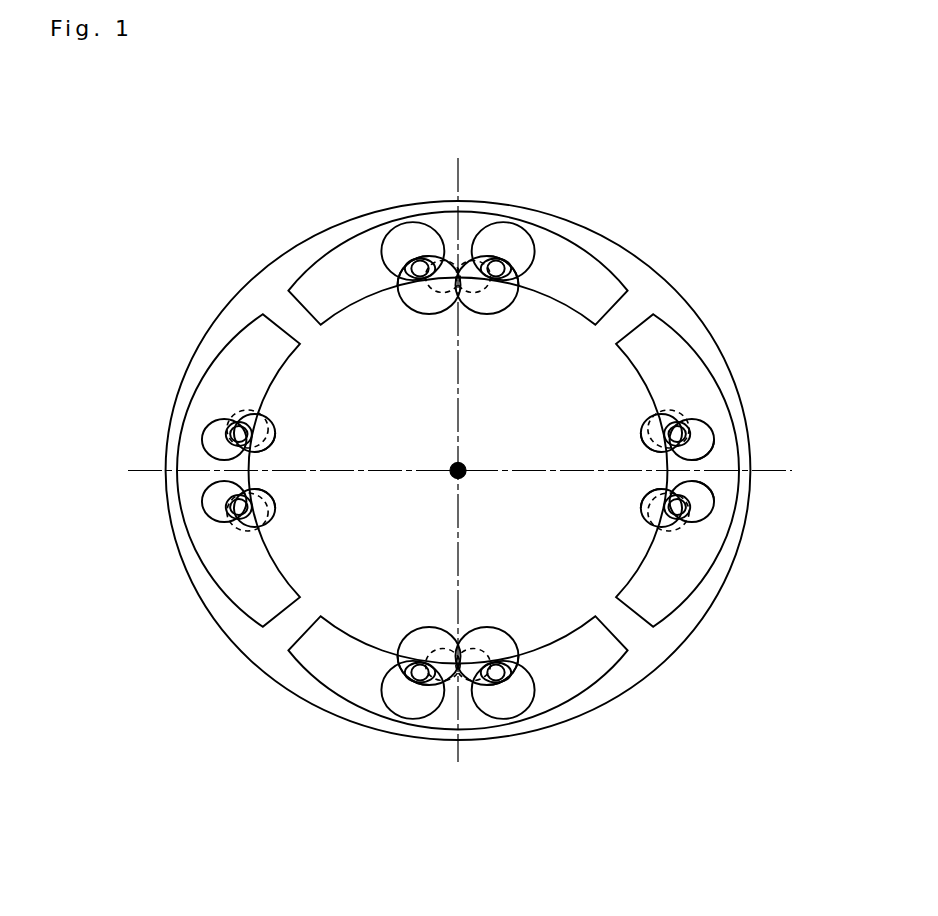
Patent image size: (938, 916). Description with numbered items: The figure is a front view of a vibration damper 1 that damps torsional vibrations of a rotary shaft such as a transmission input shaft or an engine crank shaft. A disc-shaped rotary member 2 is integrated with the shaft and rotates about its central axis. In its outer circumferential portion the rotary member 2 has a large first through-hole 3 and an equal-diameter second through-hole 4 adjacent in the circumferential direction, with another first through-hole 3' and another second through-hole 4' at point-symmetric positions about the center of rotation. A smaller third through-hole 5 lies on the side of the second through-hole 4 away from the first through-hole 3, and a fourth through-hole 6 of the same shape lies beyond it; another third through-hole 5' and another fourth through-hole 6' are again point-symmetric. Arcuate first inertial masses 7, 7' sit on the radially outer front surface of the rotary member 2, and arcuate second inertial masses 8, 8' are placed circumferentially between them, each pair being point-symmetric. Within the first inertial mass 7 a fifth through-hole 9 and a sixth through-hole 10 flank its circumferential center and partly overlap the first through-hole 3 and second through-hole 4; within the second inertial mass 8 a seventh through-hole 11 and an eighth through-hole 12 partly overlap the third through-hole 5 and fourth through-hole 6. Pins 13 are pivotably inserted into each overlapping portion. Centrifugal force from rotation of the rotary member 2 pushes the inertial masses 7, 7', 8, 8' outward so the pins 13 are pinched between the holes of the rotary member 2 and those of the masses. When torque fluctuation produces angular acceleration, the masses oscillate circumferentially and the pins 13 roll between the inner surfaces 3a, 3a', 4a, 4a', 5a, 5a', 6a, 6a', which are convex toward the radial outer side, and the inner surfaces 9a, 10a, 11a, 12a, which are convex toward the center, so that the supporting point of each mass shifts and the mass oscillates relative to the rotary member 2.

The vibration damper 1 is at (642, 134).
The rotary member 2 is at (653, 276).
The first through-hole 3 is at (429, 310).
The inner surface of first through-hole 3a is at (396, 299).
The first through-hole 3' is at (487, 629).
The inner surface of first through-hole 3a' is at (521, 639).
The second through-hole 4 is at (487, 310).
The inner surface of second through-hole 4a is at (522, 302).
The second through-hole 4' is at (428, 629).
The inner surface of second through-hole 4a' is at (393, 638).
The third through-hole 5 is at (639, 430).
The inner surface of third through-hole 5a is at (597, 439).
The third through-hole 5' is at (278, 509).
The inner surface of third through-hole 5a' is at (299, 492).
The fourth through-hole 6 is at (639, 509).
The inner surface of fourth through-hole 6a is at (631, 492).
The fourth through-hole 6' is at (278, 430).
The inner surface of fourth through-hole 6a' is at (299, 447).
The first inertial mass 7 is at (457, 254).
The first inertial mass 7' is at (462, 682).
The second inertial mass 8 is at (681, 460).
The second inertial mass 8' is at (221, 470).
The fifth through-hole 9 is at (404, 236).
The inner surface of fifth through-hole 9a is at (432, 264).
The sixth through-hole 10 is at (520, 240).
The inner surface of sixth through-hole 10a is at (472, 264).
The seventh through-hole 11 is at (708, 438).
The inner surface of seventh through-hole 11a is at (718, 455).
The eighth through-hole 12 is at (708, 500).
The inner surface of eighth through-hole 12a is at (705, 520).
The pin 13 is at (423, 264).